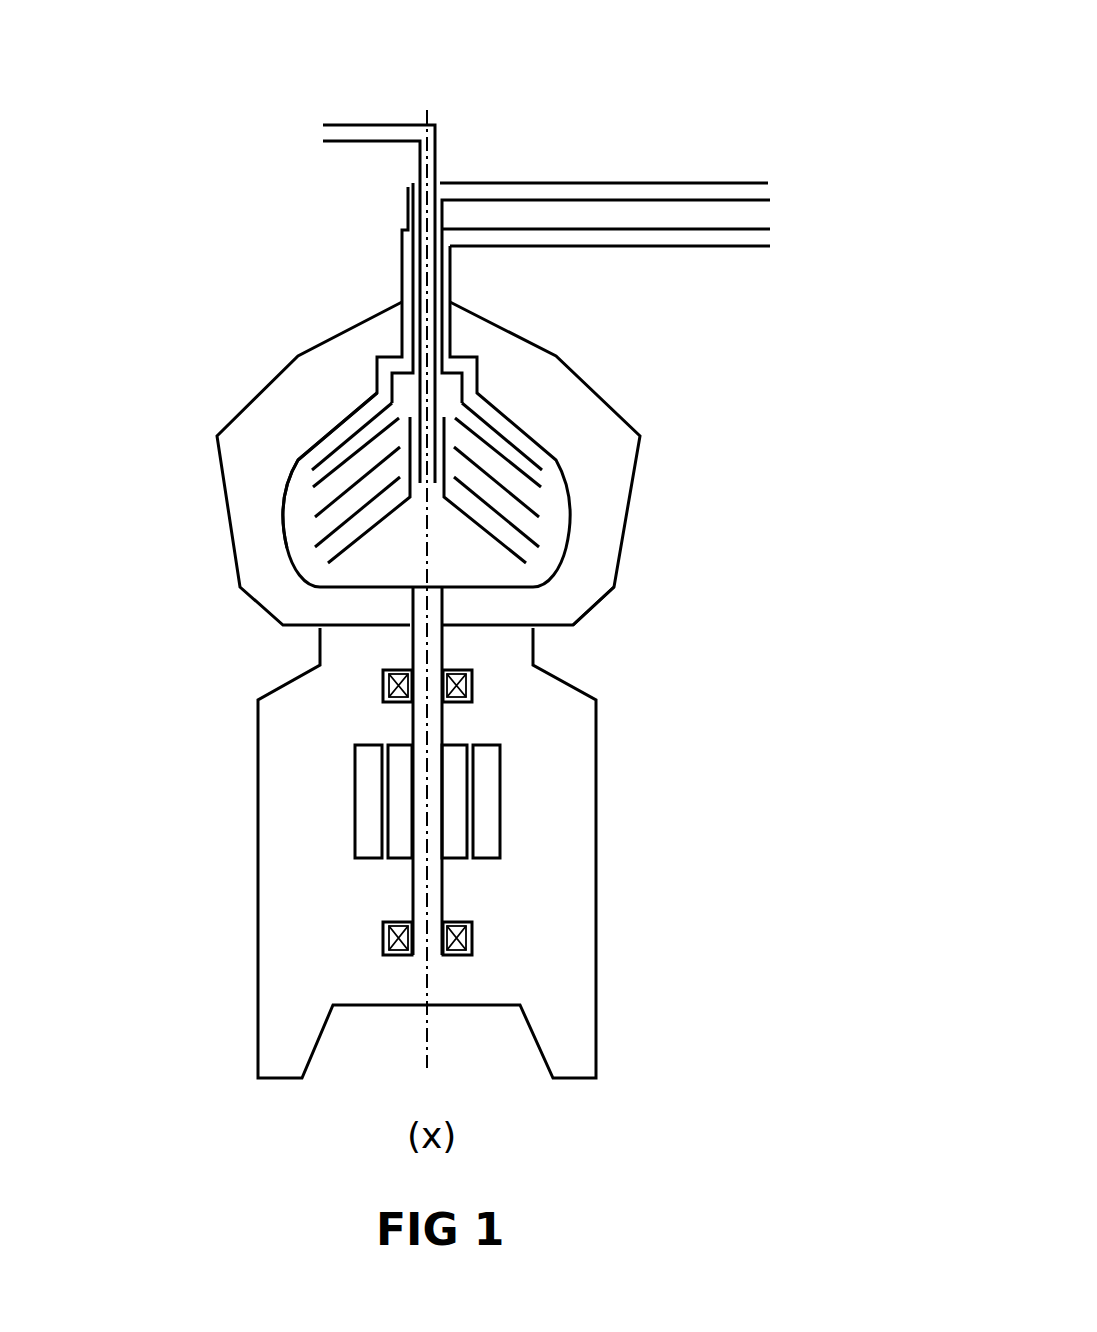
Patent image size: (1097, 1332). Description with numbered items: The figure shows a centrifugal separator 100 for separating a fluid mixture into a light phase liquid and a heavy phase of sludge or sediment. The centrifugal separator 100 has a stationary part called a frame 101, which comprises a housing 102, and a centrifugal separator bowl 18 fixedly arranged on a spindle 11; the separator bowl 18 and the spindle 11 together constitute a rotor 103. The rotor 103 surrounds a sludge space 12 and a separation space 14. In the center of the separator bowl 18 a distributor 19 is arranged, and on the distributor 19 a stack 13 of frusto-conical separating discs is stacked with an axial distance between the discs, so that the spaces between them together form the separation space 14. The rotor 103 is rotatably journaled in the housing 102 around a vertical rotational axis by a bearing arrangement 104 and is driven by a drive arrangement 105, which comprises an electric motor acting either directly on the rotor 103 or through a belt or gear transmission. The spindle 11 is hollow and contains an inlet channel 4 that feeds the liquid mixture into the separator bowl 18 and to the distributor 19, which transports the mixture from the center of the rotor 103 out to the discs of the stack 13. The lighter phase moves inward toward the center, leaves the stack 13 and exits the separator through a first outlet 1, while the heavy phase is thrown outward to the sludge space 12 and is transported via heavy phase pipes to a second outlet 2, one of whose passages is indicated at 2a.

The first outlet 1 is at (530, 180).
The second outlet 2 is at (593, 228).
The pipe outlet channel 2a is at (357, 418).
The inlet channel 4 is at (393, 118).
The spindle 11 is at (425, 648).
The sludge space 12 is at (303, 512).
The stack of frusto-conical separating discs 13 is at (345, 463).
The separation space 14 is at (532, 468).
The centrifugal separator bowl 18 is at (343, 418).
The distributor 19 is at (493, 535).
The centrifugal separator 100 is at (673, 622).
The frame 101 is at (612, 762).
The housing 102 is at (237, 388).
The rotor 103 is at (593, 492).
The bearing arrangement 104 is at (383, 678).
The drive arrangement 105 is at (513, 810).